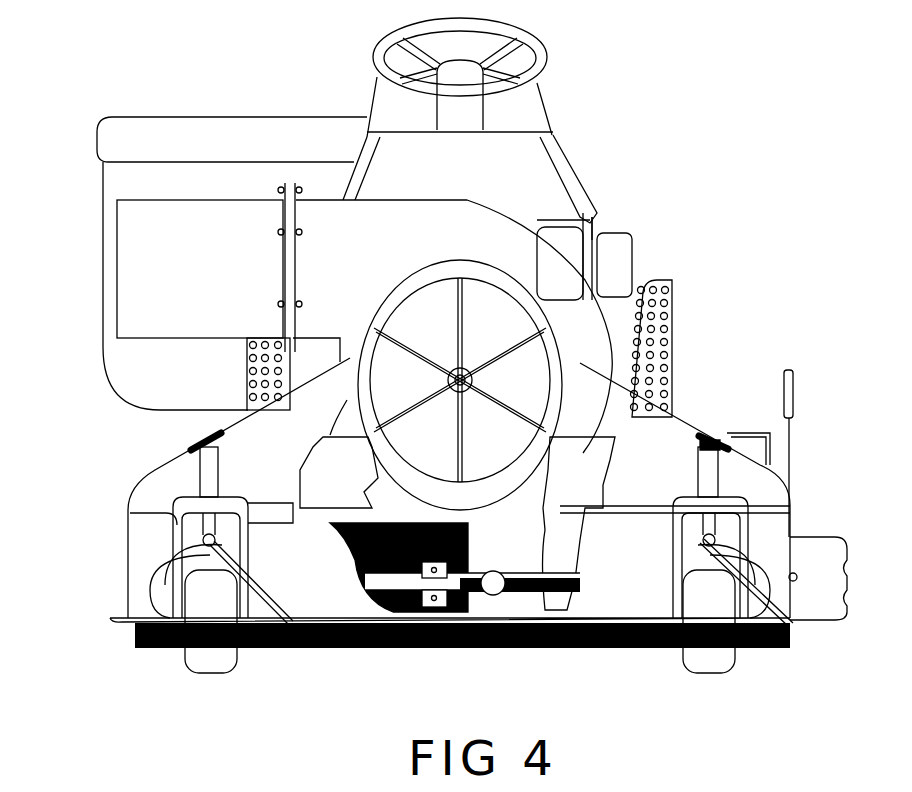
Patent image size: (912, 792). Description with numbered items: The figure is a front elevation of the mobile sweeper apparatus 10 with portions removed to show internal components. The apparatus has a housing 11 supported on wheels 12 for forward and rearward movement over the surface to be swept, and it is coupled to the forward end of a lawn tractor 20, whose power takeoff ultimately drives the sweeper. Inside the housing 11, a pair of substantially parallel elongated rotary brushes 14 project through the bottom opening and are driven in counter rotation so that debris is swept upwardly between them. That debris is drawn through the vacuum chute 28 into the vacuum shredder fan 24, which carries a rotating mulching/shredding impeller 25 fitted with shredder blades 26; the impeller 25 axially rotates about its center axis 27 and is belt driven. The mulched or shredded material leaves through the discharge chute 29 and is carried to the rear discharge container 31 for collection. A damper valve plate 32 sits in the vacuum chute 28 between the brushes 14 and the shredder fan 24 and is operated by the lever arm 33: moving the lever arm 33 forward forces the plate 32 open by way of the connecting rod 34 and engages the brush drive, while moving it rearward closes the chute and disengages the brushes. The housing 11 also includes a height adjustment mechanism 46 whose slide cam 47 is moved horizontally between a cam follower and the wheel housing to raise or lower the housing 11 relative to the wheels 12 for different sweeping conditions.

The mobile sweeper apparatus 10 is at (137, 450).
The housing 11 is at (167, 485).
The wheels 12 is at (207, 658).
The rotary brushes 14 is at (468, 545).
The lawn tractor 20 is at (530, 158).
The vacuum shredder fan 24 is at (477, 237).
The mulching/shredding impeller 25 is at (527, 322).
The shredder blades 26 is at (465, 316).
The center axis 27 is at (670, 290).
The vacuum chute 28 is at (647, 450).
The discharge chute 29 is at (165, 262).
The rear discharge container 31 is at (215, 183).
The damper valve plate 32 is at (348, 473).
The operating lever arm 33 is at (790, 370).
The connecting rod 34 is at (760, 433).
The height adjustment mechanism 46 is at (200, 537).
The slide cam 47 is at (312, 647).